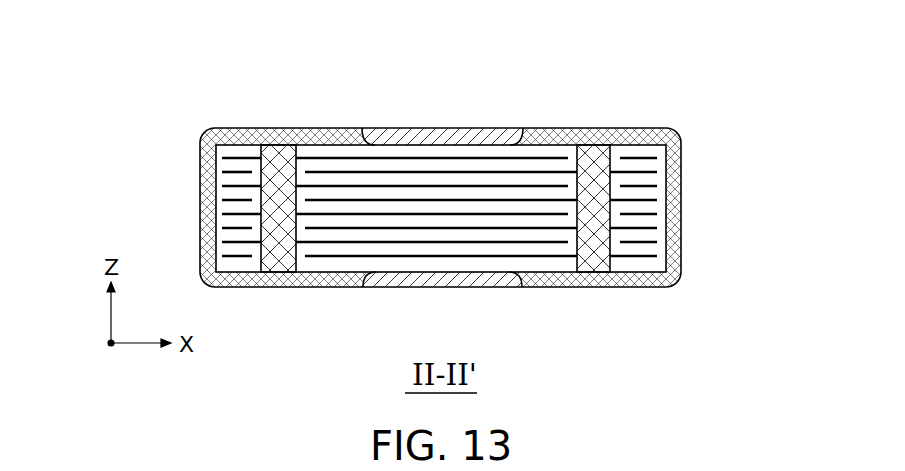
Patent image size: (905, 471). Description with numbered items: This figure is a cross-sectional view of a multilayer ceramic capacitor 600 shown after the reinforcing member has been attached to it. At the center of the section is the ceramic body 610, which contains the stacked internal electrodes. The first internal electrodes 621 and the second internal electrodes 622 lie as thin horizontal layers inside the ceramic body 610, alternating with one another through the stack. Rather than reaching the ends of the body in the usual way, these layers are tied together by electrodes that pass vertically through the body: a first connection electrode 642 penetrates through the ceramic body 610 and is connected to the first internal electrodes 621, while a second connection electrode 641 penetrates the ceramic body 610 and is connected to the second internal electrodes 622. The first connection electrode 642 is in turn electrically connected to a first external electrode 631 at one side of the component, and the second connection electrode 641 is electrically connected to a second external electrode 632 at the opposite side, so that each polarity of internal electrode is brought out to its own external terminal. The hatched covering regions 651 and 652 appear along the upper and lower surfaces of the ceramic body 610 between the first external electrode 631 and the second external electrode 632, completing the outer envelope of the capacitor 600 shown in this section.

The multilayer electronic component 600 is at (452, 47).
The ceramic body 610 is at (438, 129).
The first internal electrode 621 is at (235, 157).
The second internal electrode 622 is at (234, 174).
The first external electrode 631 is at (259, 129).
The second external electrode 632 is at (637, 129).
The second connection electrode 641 is at (604, 231).
The first connection electrode 642 is at (272, 228).
The upper cover portion 651 is at (483, 129).
The lower cover portion 652 is at (482, 288).